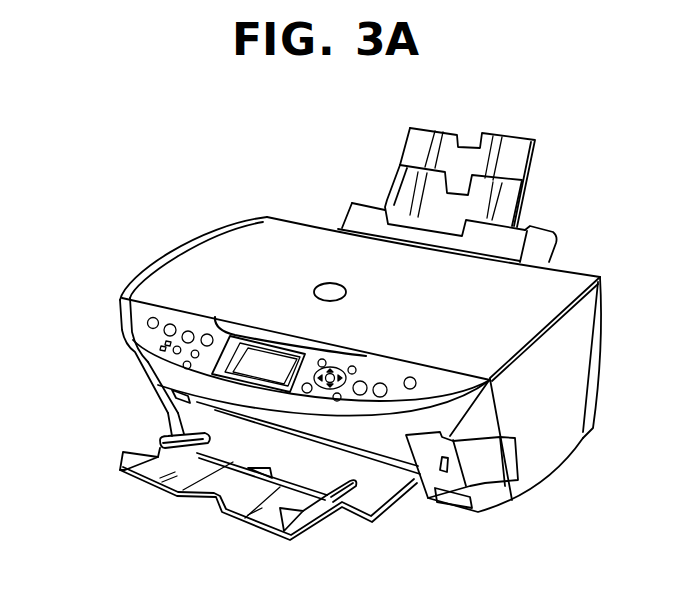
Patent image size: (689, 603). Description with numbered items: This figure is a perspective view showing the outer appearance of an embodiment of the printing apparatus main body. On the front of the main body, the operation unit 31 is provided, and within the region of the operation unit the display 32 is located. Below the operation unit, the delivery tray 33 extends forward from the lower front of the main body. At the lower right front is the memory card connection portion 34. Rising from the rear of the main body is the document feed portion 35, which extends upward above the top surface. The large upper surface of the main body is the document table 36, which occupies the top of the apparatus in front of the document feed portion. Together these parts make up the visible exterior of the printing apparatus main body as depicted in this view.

The operation unit 31 is at (122, 338).
The display 32 is at (250, 370).
The delivery tray 33 is at (173, 487).
The memory card connection portion 34 is at (482, 462).
The document feed portion 35 is at (498, 202).
The document table 36 is at (228, 258).